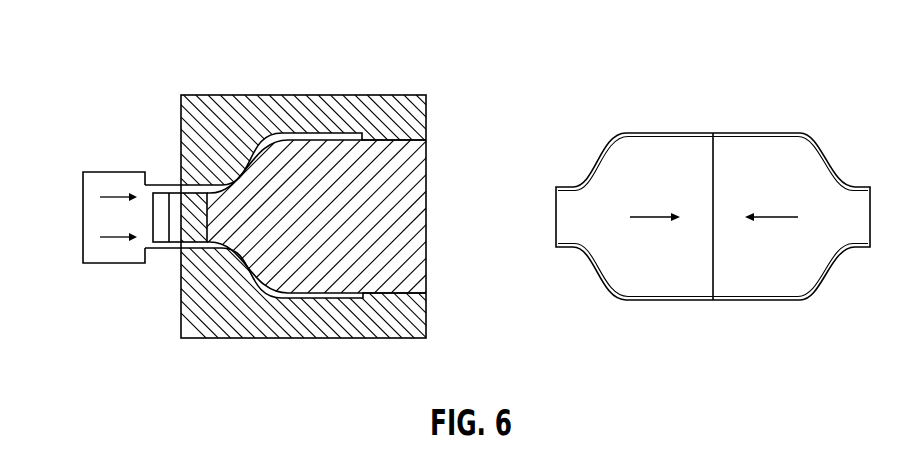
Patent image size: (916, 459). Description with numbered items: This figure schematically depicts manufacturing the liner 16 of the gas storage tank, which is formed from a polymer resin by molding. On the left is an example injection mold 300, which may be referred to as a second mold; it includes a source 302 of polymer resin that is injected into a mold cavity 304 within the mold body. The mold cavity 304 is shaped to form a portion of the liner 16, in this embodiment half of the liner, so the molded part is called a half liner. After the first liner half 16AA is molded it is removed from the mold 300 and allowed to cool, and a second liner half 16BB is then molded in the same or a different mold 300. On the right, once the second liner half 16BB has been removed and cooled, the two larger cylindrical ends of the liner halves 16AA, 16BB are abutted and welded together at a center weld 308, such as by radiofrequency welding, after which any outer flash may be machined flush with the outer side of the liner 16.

The injection mold 300 is at (110, 58).
The source of polymer resin 302 is at (110, 172).
The mold cavity 304 is at (300, 297).
The liner 16 is at (821, 299).
The liner half 16AA is at (658, 133).
The second liner half 16BB is at (780, 133).
The center weld 308 is at (715, 290).